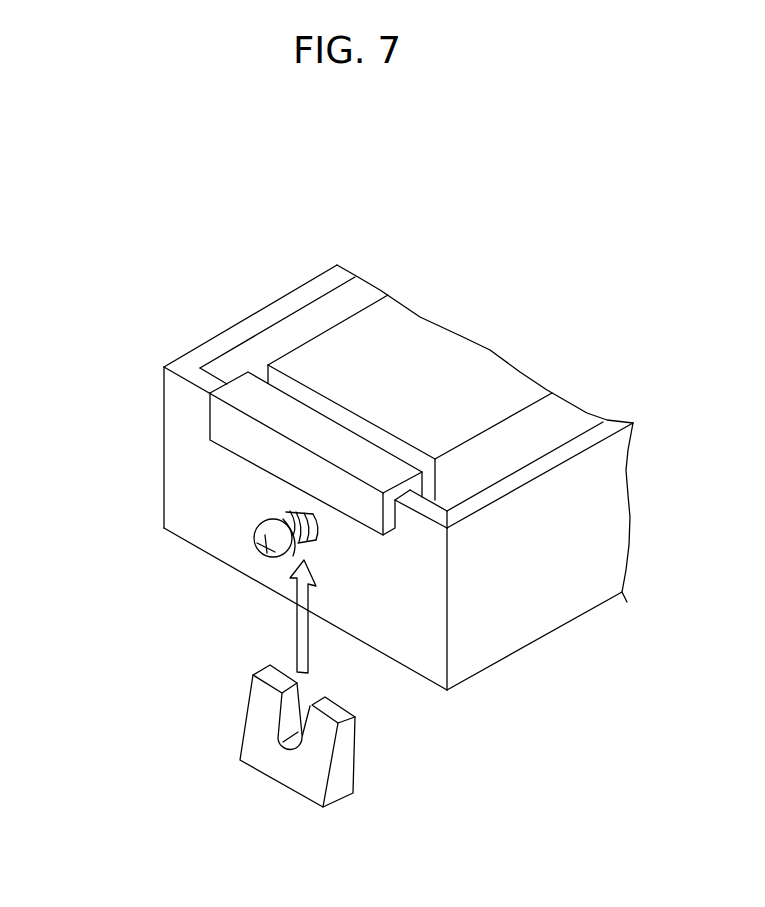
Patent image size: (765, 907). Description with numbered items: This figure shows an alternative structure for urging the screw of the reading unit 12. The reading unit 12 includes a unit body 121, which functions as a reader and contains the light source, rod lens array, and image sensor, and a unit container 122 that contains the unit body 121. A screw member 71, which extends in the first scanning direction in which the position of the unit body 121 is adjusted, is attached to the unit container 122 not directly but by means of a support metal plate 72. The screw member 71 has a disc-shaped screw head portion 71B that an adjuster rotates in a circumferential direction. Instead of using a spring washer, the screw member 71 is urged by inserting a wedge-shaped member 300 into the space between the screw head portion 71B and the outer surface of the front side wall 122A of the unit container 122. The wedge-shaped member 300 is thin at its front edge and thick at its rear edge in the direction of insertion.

The reading unit 12 is at (346, 485).
The unit body 121 is at (332, 348).
The unit container 122 is at (346, 576).
The front side wall 122A is at (205, 537).
The support metal plate 72 is at (203, 427).
The screw member 71 is at (186, 583).
The screw head portion 71B is at (257, 528).
The wedge-shaped member 300 is at (272, 797).